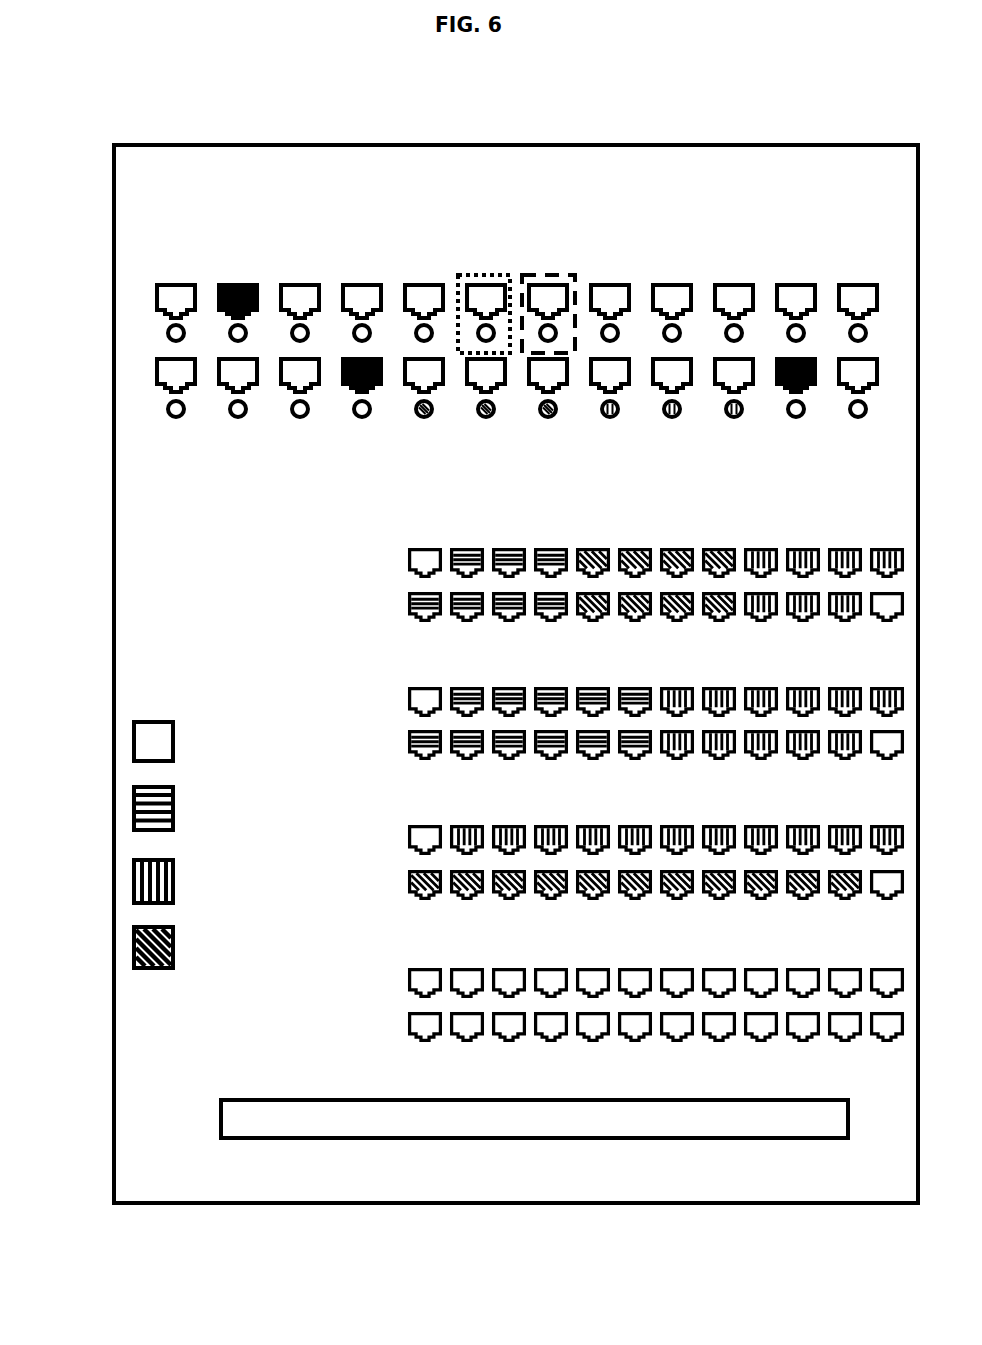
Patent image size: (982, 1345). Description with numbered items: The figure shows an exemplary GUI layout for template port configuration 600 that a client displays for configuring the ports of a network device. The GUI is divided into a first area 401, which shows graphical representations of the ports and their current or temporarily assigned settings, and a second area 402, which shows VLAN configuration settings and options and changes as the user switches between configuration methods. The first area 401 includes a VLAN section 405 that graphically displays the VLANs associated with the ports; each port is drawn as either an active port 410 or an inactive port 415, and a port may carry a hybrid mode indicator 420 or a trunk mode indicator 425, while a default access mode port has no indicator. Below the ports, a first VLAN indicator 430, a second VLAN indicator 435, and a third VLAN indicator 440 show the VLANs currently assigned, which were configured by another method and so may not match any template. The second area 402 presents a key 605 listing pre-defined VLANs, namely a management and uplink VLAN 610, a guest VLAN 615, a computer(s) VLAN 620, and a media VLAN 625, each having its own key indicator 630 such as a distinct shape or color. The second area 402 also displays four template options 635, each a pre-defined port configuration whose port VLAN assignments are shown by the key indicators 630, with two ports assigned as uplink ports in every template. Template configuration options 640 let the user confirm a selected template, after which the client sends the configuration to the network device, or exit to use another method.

The first area 401 is at (105, 180).
The second area 402 is at (105, 517).
The VLAN section 405 is at (252, 212).
The active port 410 is at (247, 279).
The inactive port 415 is at (323, 279).
The hybrid mode indicator 420 is at (487, 264).
The trunk mode indicator 425 is at (570, 264).
The first VLAN indicator 430 is at (249, 424).
The second VLAN indicator 435 is at (437, 423).
The third VLAN indicator 440 is at (624, 423).
The template port configuration 600 is at (702, 1196).
The key 605 is at (278, 682).
The management and uplink VLAN 610 is at (300, 767).
The guest VLAN 615 is at (300, 824).
The computer(s) VLAN 620 is at (368, 894).
The media VLAN 625 is at (217, 993).
The key indicator 630 is at (175, 991).
The template options 635 is at (380, 572).
The template configuration options 640 is at (617, 1131).